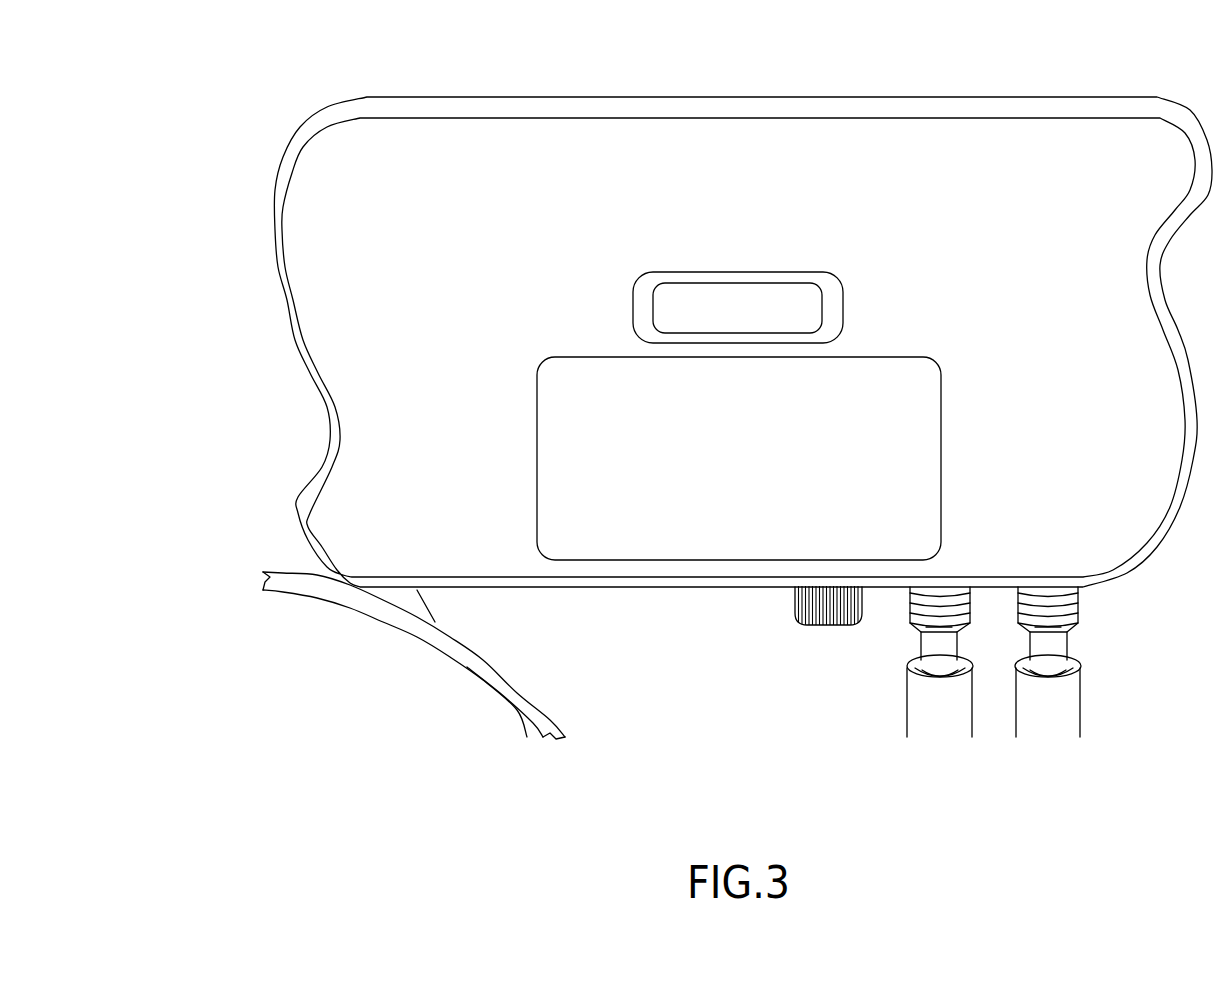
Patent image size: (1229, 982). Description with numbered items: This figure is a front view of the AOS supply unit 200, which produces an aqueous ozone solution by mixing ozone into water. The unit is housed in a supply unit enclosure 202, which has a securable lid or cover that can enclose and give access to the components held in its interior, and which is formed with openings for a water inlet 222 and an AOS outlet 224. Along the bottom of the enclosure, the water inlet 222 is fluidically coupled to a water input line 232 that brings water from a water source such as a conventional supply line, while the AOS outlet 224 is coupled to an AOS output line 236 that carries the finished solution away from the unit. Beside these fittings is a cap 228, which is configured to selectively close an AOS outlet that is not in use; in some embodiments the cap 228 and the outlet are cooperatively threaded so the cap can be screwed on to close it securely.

The AOS supply unit 200 is at (275, 57).
The supply unit enclosure 202 is at (1034, 107).
The cap 228 is at (805, 620).
The AOS outlet 224 is at (912, 617).
The AOS output line 236 is at (912, 706).
The water inlet 222 is at (1077, 612).
The water input line 232 is at (1075, 703).